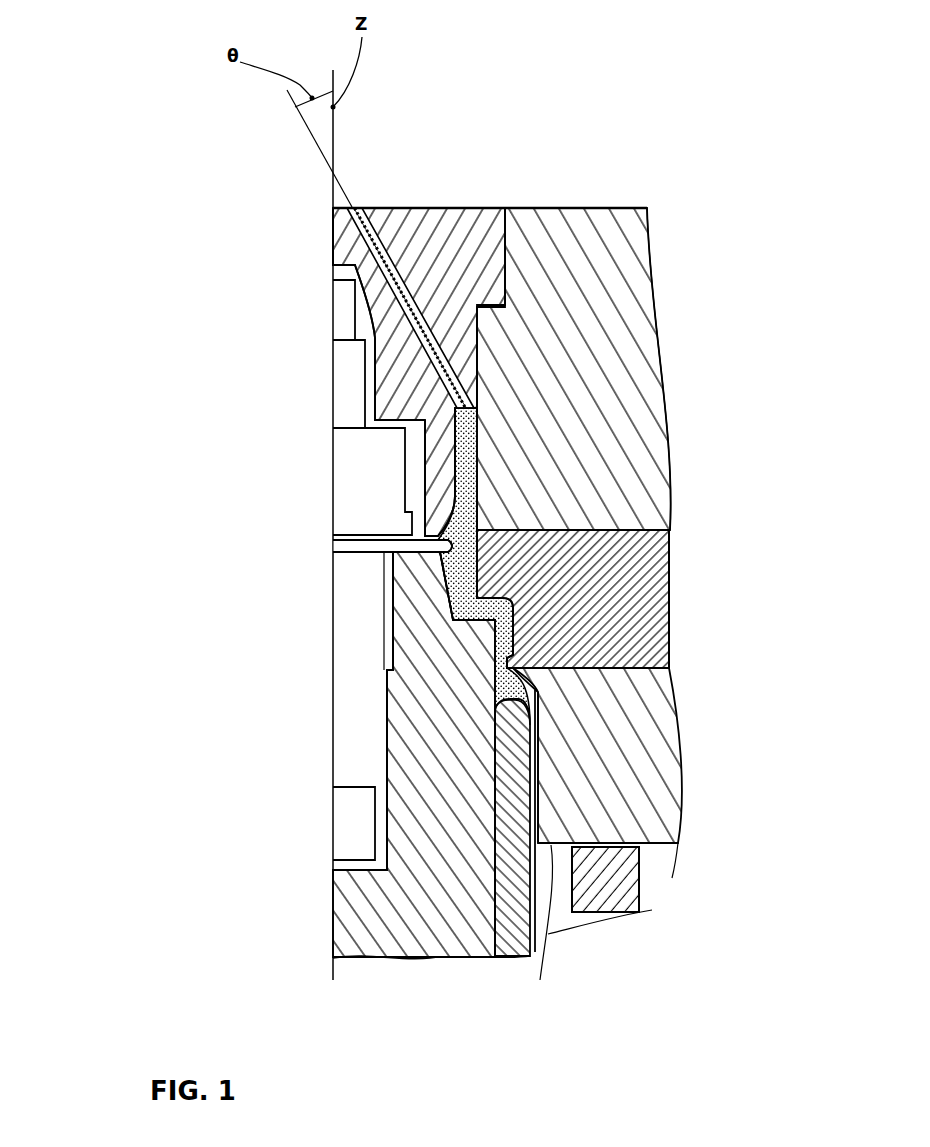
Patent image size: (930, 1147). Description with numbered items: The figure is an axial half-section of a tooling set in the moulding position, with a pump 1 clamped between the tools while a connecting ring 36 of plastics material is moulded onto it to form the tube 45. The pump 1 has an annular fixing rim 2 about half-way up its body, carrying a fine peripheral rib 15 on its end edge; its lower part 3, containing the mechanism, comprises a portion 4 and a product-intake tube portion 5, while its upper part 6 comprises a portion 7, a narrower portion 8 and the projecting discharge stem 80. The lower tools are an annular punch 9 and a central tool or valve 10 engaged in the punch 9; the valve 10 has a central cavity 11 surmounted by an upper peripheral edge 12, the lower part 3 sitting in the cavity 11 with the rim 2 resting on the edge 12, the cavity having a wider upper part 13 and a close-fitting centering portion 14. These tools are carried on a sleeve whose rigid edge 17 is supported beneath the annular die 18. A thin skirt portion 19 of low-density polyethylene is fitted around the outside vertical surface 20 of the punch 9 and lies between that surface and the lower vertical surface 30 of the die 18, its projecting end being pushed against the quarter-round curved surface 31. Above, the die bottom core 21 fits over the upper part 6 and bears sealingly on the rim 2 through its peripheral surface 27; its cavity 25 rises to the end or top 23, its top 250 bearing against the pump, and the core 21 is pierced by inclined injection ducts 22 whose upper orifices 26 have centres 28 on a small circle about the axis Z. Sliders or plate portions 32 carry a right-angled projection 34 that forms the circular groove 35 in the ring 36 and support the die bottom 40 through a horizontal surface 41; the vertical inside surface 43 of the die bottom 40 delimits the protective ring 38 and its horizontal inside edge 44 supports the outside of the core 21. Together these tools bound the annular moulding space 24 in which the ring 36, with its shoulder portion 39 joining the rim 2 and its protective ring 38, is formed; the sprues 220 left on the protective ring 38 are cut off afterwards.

The pump 1 is at (325, 613).
The annular fixing rim 2 is at (388, 544).
The lower part 3 is at (295, 669).
The portion 4 is at (352, 687).
The tube portion 5 is at (350, 812).
The upper part 6 is at (293, 481).
The portion 7 is at (355, 455).
The narrower portion 8 is at (348, 365).
The annular punch 9 is at (502, 778).
The central tool or valve 10 is at (360, 915).
The central cavity 11 is at (387, 827).
The upper peripheral edge 12 is at (417, 553).
The upper part 13 is at (393, 613).
The centering portion 14 is at (387, 713).
The peripheral rib 15 is at (453, 546).
The rigid edge 17 is at (610, 887).
The annular die 18 is at (638, 805).
The skirt portion 19 is at (536, 952).
The outside vertical surface 20 is at (494, 803).
The die bottom core 21 is at (483, 238).
The injection ducts 22 is at (442, 244).
The sprues 220 is at (386, 245).
The end or top 23 is at (480, 207).
The annular moulding space 24 is at (617, 552).
The cavity 25 is at (375, 385).
The upper orifices 26 is at (377, 247).
The peripheral surface 27 is at (433, 505).
The centres 28 is at (362, 207).
The lower vertical surface 30 is at (537, 765).
The curved surface 31 is at (530, 690).
The plate portions or sliders 32 is at (615, 638).
The shoulder or projection 34 is at (644, 682).
The circular groove 35 is at (507, 662).
The connecting ring 36 is at (617, 552).
The protective ring 38 is at (480, 407).
The shoulder portion 39 is at (480, 517).
The die bottom 40 is at (635, 487).
The horizontal surface 41 is at (517, 528).
The vertical inside surface 43 is at (477, 348).
The horizontal inside edge 44 is at (500, 305).
The tube 45 is at (463, 505).
The discharge stem 80 is at (342, 308).
The top 250 is at (345, 265).